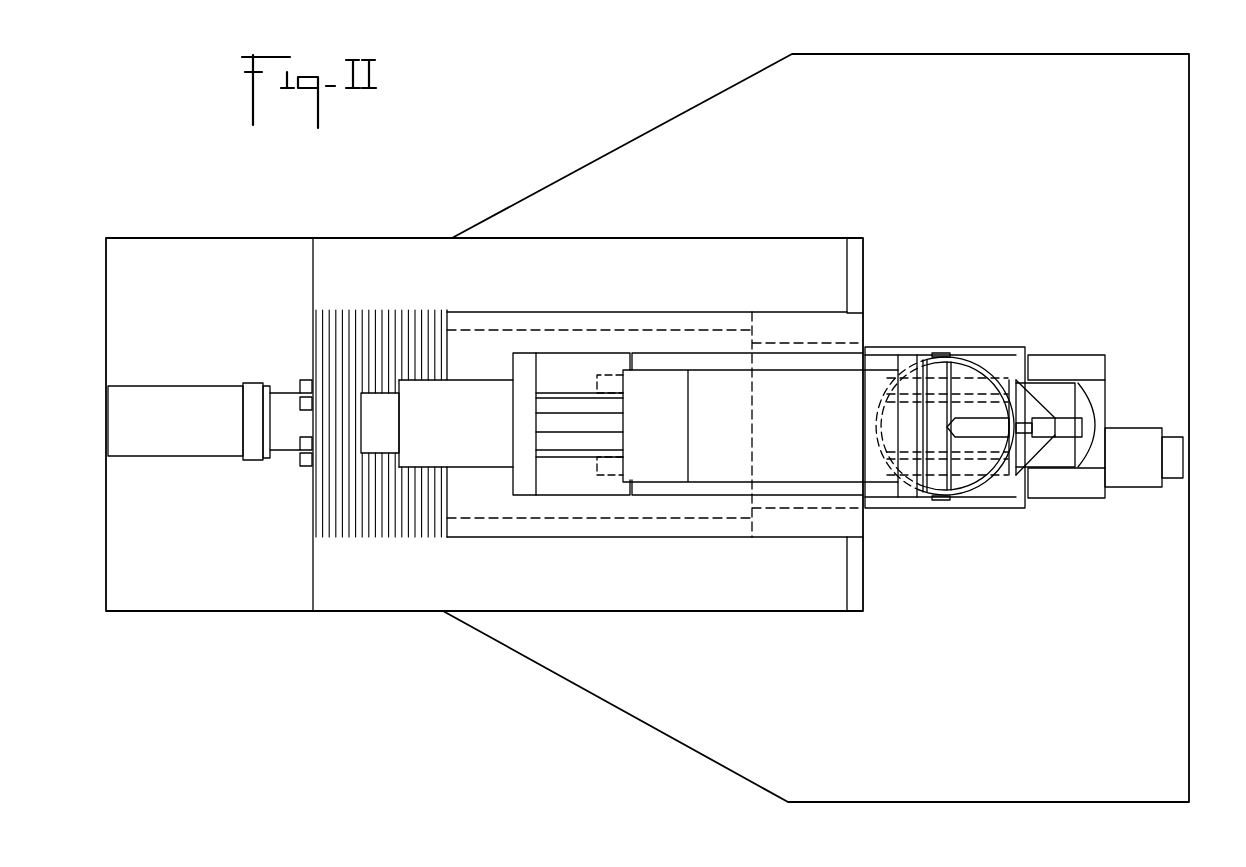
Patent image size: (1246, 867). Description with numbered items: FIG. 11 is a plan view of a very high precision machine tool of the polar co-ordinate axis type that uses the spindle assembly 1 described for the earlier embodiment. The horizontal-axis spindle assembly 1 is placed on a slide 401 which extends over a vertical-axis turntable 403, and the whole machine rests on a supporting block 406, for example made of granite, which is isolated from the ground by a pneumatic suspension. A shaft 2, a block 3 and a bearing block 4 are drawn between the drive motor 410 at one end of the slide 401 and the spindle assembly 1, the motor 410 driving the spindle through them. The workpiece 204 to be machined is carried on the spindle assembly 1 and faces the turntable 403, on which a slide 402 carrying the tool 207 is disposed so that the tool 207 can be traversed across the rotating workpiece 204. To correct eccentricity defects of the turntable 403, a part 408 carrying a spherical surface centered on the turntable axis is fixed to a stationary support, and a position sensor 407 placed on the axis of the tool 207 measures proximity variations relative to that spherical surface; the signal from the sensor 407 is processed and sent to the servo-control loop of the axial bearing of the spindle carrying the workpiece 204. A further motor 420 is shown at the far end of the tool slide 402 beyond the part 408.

The spindle assembly 1 is at (717, 385).
The shaft 2 is at (488, 452).
The coupling block 3 is at (584, 372).
The bearing block 4 is at (382, 433).
The workpiece 204 is at (940, 372).
The tool 207 is at (980, 423).
The slide 401 is at (661, 583).
The slide 402 is at (1063, 365).
The turntable 403 is at (975, 488).
The supporting block 406 is at (1172, 153).
The position sensor 407 is at (1063, 430).
The part 408 is at (1097, 397).
The drive motor 410 is at (178, 397).
The motor 420 is at (1138, 483).